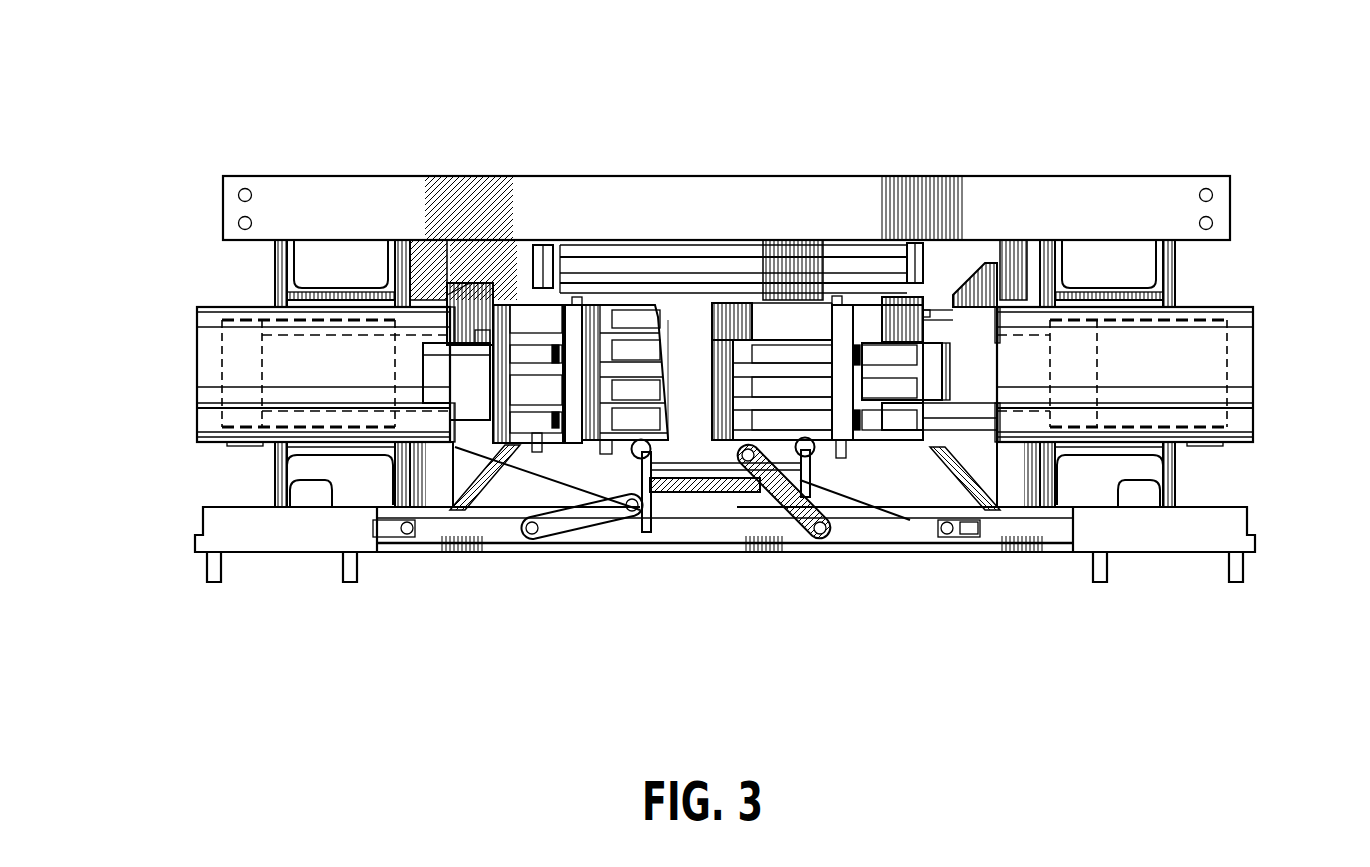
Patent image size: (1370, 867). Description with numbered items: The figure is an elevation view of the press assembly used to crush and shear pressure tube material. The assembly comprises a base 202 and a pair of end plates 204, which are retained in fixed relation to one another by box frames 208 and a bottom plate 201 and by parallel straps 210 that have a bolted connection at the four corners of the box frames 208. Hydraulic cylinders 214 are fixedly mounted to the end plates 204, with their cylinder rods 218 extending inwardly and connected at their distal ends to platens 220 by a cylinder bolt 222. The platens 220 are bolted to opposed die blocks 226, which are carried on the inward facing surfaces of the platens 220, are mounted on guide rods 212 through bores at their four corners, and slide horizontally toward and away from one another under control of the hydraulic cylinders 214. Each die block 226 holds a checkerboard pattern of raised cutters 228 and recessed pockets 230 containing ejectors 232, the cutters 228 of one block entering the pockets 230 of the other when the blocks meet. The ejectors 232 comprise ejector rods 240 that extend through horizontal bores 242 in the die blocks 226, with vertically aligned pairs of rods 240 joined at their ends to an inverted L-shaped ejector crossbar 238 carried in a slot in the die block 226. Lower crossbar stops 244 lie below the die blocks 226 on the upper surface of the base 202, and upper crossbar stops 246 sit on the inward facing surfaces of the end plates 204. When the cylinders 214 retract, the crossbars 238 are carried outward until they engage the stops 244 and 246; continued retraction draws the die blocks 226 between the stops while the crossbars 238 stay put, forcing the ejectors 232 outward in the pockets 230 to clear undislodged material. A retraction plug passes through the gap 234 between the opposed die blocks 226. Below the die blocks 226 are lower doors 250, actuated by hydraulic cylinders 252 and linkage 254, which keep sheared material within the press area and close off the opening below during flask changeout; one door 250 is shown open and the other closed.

The bottom plate 201 is at (550, 550).
The base 202 is at (502, 490).
The end plates 204 is at (420, 482).
The box frames 208 is at (275, 468).
The parallel straps 210 is at (1145, 188).
The guide rods 212 is at (703, 262).
The hydraulic cylinders 214 is at (200, 368).
The cylinder rods 218 is at (410, 370).
The platens 220 is at (467, 325).
The cylinder bolt 222 is at (918, 373).
The die blocks 226 is at (500, 420).
The raised cutters 228 is at (647, 313).
The recessed pockets 230 is at (730, 317).
The ejectors 232 is at (660, 483).
The gap 234 is at (688, 348).
The ejector crossbar 238 is at (573, 318).
The ejector rods 240 is at (608, 357).
The horizontal bores 242 is at (508, 353).
The lower crossbar stops 244 is at (540, 447).
The upper crossbar stops 246 is at (480, 298).
The lower doors 250 is at (635, 527).
The hydraulic cylinders 252 is at (296, 545).
The linkage 254 is at (573, 520).